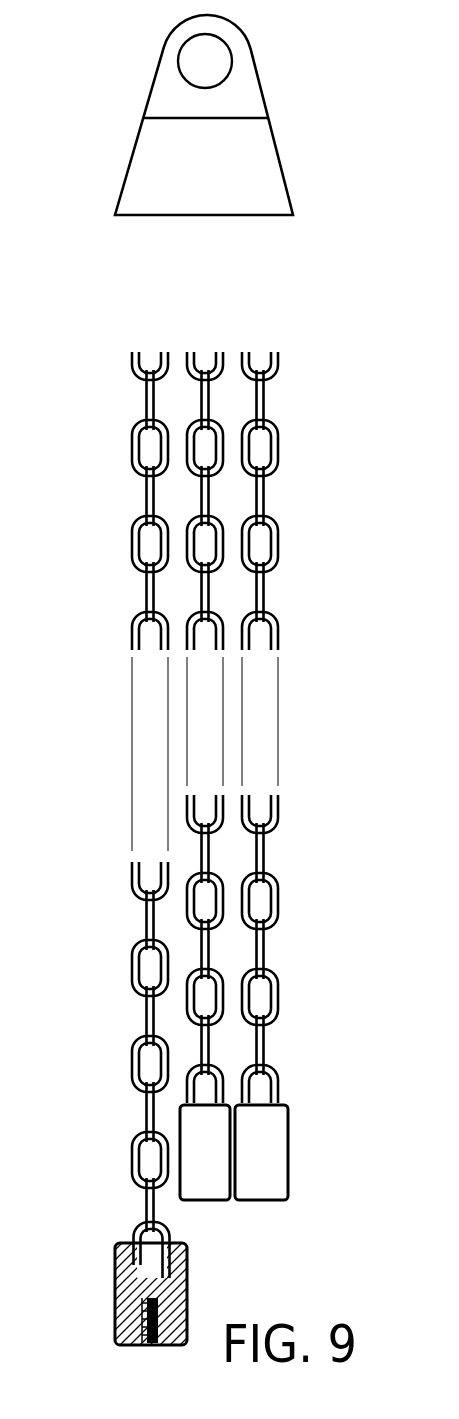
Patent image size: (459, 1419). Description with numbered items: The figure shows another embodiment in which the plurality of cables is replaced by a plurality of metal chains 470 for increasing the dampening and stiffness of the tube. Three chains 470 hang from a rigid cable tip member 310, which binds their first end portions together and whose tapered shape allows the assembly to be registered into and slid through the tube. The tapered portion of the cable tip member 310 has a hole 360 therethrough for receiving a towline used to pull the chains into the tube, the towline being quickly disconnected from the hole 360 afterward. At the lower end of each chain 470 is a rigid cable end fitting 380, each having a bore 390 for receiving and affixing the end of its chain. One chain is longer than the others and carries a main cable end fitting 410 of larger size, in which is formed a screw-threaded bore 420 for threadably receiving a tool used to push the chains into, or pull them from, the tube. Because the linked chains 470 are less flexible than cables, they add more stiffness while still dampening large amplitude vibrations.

The cable tip member 310 is at (115, 278).
The hole 360 is at (213, 72).
The cable end fitting 380 is at (275, 1163).
The bore 390 is at (137, 1230).
The main cable end fitting 410 is at (115, 1300).
The screw-threaded bore 420 is at (146, 1345).
The metal chain 470 is at (278, 458).